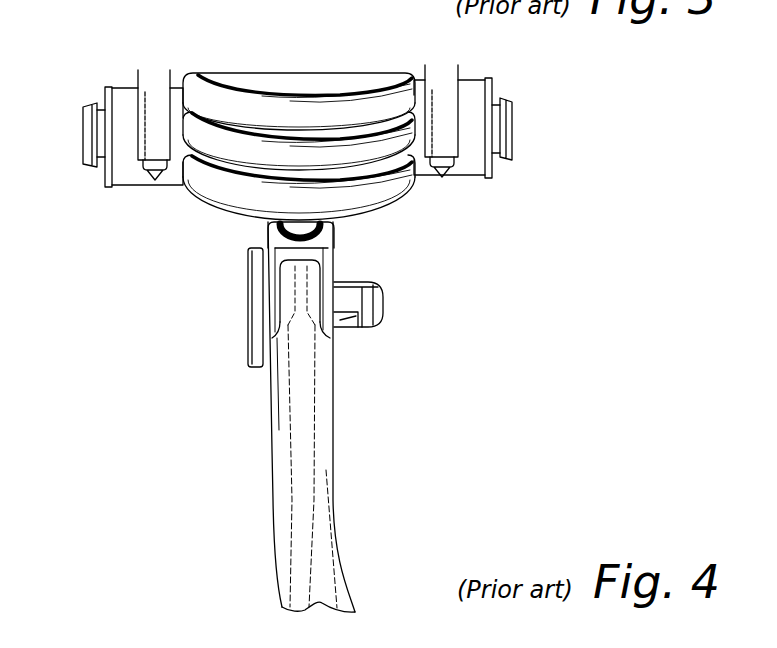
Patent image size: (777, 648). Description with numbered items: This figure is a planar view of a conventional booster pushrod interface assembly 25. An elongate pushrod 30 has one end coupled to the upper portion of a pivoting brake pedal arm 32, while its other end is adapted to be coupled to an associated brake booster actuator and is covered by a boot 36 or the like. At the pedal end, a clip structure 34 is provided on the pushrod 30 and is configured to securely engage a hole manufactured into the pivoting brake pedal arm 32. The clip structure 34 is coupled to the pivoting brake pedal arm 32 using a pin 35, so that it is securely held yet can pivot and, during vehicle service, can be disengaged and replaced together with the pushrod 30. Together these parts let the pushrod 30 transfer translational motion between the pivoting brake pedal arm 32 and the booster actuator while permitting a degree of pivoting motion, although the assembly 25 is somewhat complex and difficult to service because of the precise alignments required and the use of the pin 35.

The booster pushrod interface assembly 25 is at (389, 249).
The pushrod 30 is at (241, 238).
The pivoting brake pedal arm 32 is at (333, 442).
The clip structure 34 is at (346, 252).
The pin 35 is at (263, 367).
The boot 36 is at (201, 189).